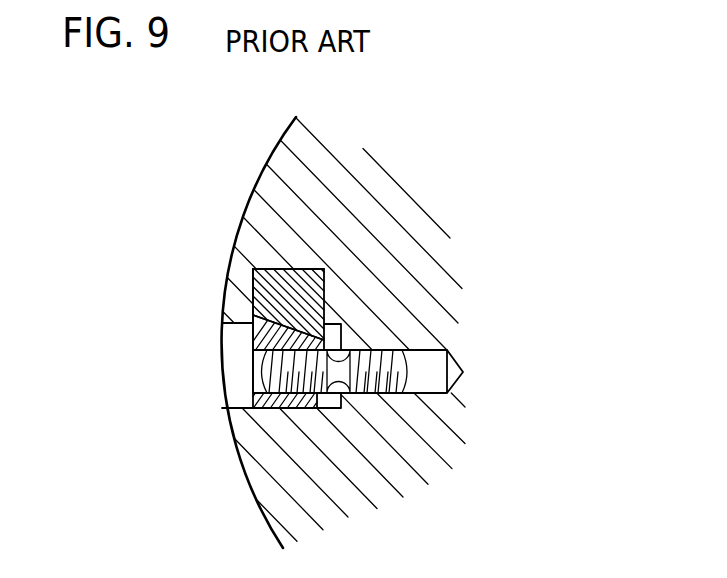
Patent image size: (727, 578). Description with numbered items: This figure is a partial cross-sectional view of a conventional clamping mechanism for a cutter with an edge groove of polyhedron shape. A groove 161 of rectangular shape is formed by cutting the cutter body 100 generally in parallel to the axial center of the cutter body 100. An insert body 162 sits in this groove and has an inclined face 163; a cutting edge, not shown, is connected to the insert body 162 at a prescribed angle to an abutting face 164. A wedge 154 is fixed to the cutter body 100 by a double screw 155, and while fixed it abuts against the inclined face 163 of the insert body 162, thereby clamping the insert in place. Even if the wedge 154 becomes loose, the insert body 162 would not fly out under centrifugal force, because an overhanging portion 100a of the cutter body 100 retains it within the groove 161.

The cutter body 100 is at (277, 478).
The overhanging portion 100a is at (242, 323).
The wedge 154 is at (252, 413).
The double screw 155 is at (390, 350).
The groove 161 is at (252, 288).
The insert body 162 is at (318, 268).
The inclined face 163 is at (256, 328).
The abutting face 164 is at (303, 280).